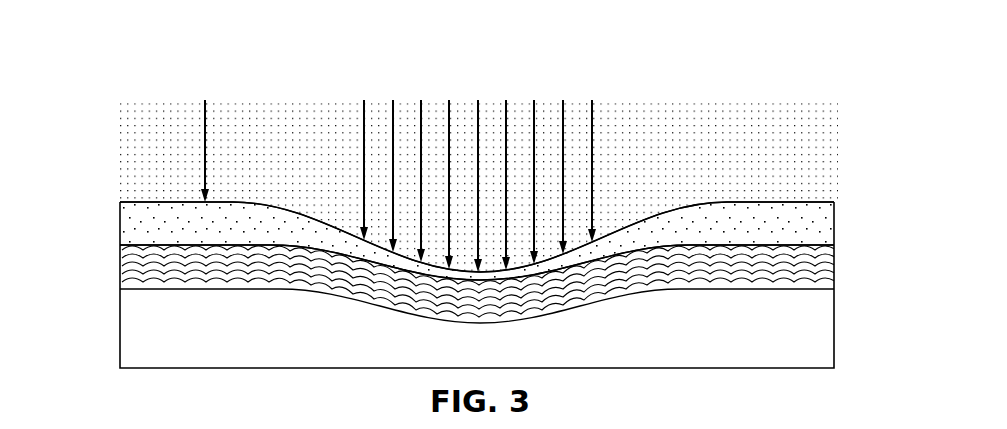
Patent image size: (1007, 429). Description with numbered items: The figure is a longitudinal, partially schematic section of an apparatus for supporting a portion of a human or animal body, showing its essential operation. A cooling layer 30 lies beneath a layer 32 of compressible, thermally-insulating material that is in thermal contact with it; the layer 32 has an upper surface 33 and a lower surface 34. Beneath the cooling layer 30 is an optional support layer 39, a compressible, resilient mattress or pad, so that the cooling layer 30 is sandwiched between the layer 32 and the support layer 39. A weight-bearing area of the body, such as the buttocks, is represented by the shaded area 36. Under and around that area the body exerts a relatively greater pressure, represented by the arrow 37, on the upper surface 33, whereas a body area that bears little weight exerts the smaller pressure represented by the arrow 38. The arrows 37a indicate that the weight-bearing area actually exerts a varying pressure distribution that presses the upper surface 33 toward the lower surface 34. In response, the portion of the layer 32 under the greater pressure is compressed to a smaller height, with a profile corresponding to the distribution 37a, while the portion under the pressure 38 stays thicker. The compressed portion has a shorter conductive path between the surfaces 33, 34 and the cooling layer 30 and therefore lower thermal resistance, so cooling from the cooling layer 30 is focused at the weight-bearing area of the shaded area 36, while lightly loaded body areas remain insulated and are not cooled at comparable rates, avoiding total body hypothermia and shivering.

The cooling layer 30 is at (845, 245).
The layer of compressible, thermally-insulating material 32 is at (845, 202).
The upper surface 33 is at (142, 200).
The lower surface 34 is at (132, 248).
The shaded area 36 is at (845, 103).
The arrow 37 is at (478, 130).
The arrows 37a is at (449, 122).
The arrow 38 is at (205, 130).
The support layer 39 is at (845, 289).